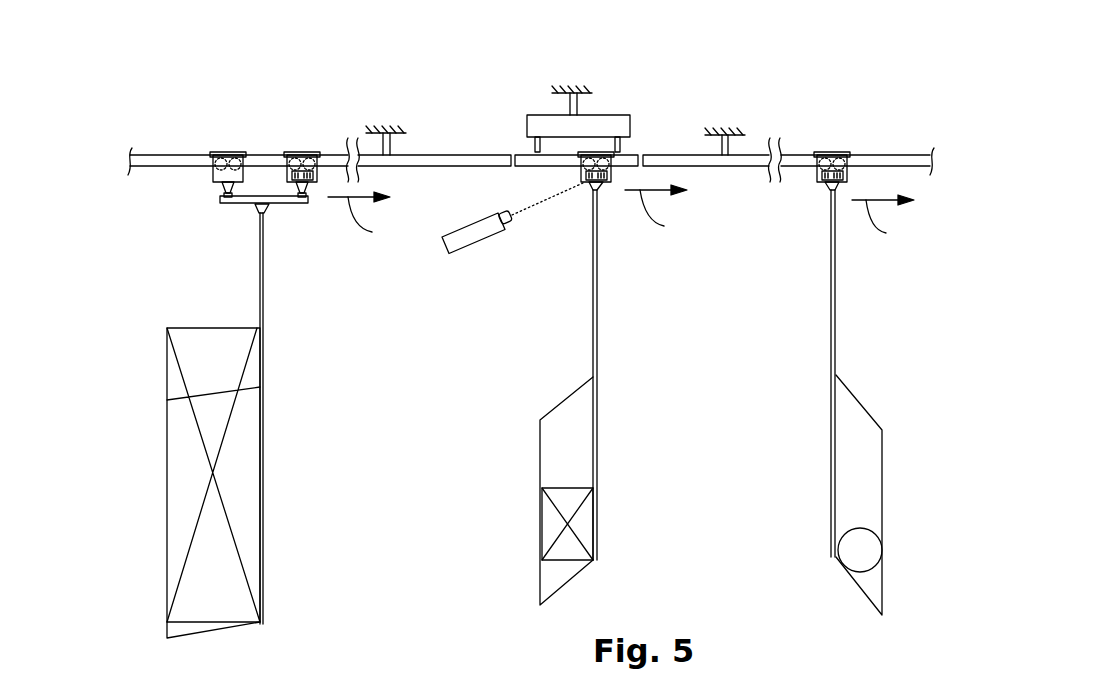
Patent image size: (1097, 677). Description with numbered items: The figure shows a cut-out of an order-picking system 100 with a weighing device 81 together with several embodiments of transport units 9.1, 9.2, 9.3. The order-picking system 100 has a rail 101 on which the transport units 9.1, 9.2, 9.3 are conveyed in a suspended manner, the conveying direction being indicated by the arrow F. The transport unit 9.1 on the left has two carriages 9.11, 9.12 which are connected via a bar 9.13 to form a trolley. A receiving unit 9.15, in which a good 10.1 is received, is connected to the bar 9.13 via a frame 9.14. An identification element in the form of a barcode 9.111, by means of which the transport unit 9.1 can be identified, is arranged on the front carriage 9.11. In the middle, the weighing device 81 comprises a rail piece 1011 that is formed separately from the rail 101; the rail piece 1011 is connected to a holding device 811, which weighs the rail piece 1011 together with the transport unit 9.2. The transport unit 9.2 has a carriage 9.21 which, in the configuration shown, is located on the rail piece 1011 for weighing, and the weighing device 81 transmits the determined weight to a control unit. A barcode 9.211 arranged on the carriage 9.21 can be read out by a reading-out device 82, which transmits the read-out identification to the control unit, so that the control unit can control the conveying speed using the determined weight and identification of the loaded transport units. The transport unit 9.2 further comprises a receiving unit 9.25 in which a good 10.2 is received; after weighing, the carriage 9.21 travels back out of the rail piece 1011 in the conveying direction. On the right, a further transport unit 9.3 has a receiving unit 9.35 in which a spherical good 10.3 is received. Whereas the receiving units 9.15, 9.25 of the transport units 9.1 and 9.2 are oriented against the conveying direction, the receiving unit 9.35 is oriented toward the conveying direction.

The order-picking system 100 is at (283, 90).
The rail 101 is at (199, 161).
The rail piece 1011 is at (628, 160).
The weighing device 81 is at (625, 83).
The holding device 811 is at (538, 113).
The reading-out device 82 is at (472, 236).
The transport unit 9.1 is at (165, 373).
The front carriage 9.11 is at (303, 151).
The barcode 9.111 is at (322, 165).
The carriage 9.12 is at (228, 151).
The bar 9.13 is at (279, 203).
The frame 9.14 is at (263, 276).
The receiving unit 9.15 is at (188, 628).
The good 10.1 is at (204, 340).
The transport unit 9.2 is at (508, 433).
The carriage 9.21 is at (595, 155).
The barcode 9.211 is at (604, 184).
The receiving unit 9.25 is at (556, 572).
The good 10.2 is at (548, 519).
The transport unit 9.3 is at (817, 487).
The receiving unit 9.35 is at (864, 456).
The spherical good 10.3 is at (853, 552).